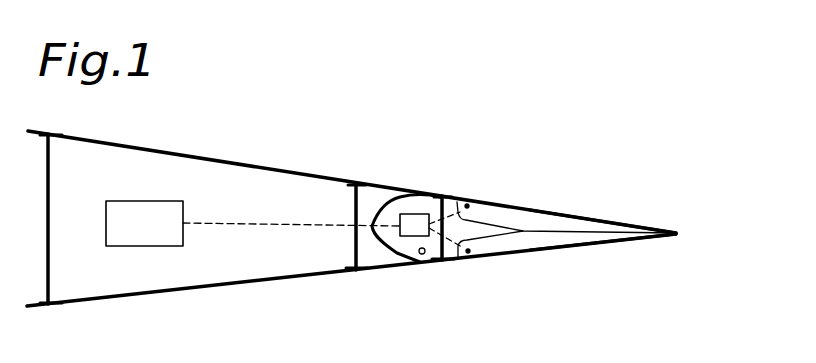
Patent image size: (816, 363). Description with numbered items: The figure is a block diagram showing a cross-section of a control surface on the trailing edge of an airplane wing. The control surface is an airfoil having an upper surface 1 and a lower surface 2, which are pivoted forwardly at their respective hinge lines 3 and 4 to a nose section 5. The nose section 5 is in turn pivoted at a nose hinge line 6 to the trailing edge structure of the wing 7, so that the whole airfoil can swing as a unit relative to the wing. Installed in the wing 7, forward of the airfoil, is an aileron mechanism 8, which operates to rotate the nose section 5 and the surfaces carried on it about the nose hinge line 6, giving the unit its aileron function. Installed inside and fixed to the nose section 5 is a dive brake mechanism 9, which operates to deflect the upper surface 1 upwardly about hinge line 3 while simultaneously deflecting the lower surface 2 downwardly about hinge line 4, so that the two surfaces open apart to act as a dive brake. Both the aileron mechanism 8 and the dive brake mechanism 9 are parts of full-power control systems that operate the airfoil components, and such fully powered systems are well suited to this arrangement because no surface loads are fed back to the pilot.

The upper surface 1 is at (568, 213).
The lower surface 2 is at (550, 252).
The hinge line 3 is at (467, 206).
The hinge line 4 is at (468, 251).
The nose section 5 is at (390, 250).
The nose hinge line 6 is at (423, 255).
The wing 7 is at (273, 285).
The aileron mechanism 8 is at (164, 240).
The dive brake mechanism 9 is at (414, 211).